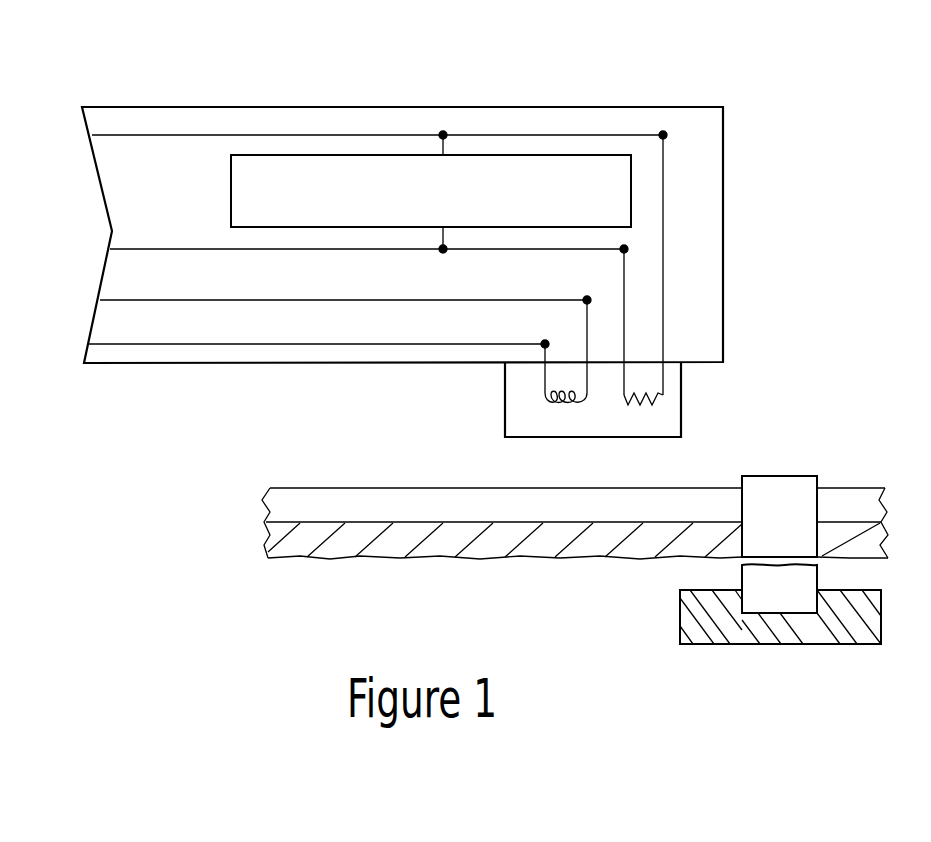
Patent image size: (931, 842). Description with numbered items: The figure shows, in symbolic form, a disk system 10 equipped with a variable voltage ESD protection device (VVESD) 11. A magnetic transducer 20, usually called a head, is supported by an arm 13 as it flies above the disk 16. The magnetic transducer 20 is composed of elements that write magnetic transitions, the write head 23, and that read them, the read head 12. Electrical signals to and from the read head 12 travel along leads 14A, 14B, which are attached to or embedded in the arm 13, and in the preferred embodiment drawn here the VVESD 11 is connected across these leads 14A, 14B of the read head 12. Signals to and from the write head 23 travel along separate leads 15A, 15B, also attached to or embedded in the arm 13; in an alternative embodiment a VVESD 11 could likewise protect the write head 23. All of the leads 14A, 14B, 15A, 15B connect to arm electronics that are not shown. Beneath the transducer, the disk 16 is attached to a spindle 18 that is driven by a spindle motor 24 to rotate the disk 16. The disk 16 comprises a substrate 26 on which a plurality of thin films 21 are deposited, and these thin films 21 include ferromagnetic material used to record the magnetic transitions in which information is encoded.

The disk system 10 is at (170, 77).
The variable voltage ESD protection device 11 is at (492, 165).
The read head 12 is at (665, 399).
The arm 13 is at (703, 241).
The lead 14A is at (155, 137).
The lead 14B is at (160, 245).
The lead 15A is at (140, 292).
The lead 15B is at (132, 336).
The disk 16 is at (243, 536).
The spindle 18 is at (797, 482).
The magnetic transducer 20 is at (493, 430).
The thin films 21 is at (587, 521).
The write head 23 is at (540, 398).
The spindle motor 24 is at (690, 617).
The substrate 26 is at (395, 551).